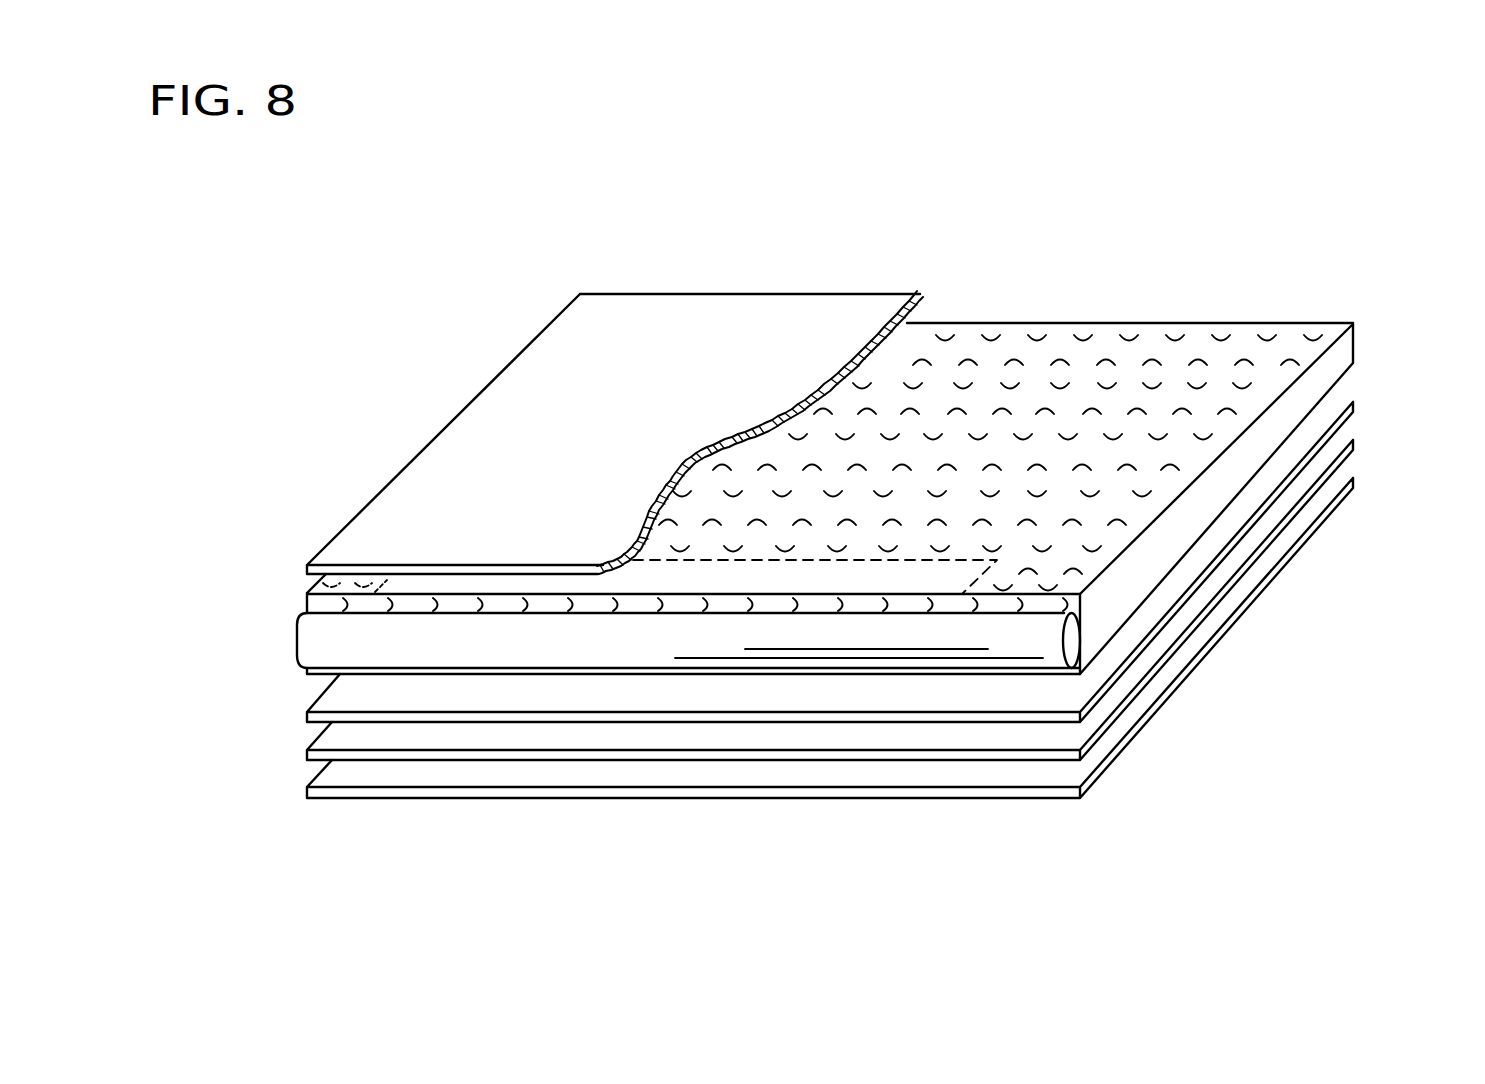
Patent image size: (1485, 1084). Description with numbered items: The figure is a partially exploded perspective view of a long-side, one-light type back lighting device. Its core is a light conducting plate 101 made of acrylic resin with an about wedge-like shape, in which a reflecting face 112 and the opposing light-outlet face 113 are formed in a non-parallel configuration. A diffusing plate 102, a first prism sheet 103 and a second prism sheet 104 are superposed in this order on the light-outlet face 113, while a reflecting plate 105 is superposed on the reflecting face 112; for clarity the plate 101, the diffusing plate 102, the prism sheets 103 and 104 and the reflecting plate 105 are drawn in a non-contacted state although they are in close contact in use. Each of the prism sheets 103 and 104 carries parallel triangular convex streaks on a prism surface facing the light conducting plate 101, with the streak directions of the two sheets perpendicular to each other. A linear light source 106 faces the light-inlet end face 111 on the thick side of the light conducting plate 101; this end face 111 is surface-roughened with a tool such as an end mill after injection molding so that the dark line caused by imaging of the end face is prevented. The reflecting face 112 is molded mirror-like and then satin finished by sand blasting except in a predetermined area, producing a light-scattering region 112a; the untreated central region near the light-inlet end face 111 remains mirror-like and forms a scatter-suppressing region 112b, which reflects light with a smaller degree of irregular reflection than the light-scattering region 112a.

The light conducting plate 101 is at (1027, 302).
The diffusing plate 102 is at (313, 715).
The first prism sheet 103 is at (310, 752).
The second prism sheet 104 is at (372, 798).
The reflecting plate 105 is at (693, 298).
The linear light source 106 is at (317, 640).
The light-inlet end face 111 is at (310, 603).
The reflecting face 112 is at (1140, 337).
The light-scattering region 112a is at (953, 347).
The scatter-suppressing region 112b is at (670, 570).
The light-outlet face 113 is at (1350, 370).